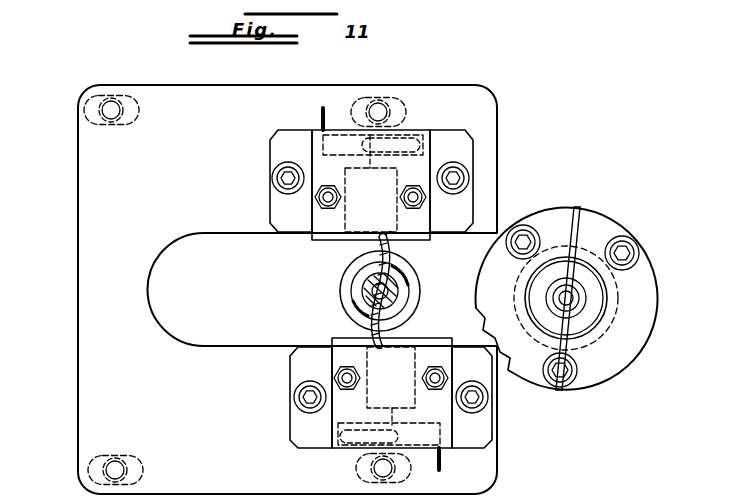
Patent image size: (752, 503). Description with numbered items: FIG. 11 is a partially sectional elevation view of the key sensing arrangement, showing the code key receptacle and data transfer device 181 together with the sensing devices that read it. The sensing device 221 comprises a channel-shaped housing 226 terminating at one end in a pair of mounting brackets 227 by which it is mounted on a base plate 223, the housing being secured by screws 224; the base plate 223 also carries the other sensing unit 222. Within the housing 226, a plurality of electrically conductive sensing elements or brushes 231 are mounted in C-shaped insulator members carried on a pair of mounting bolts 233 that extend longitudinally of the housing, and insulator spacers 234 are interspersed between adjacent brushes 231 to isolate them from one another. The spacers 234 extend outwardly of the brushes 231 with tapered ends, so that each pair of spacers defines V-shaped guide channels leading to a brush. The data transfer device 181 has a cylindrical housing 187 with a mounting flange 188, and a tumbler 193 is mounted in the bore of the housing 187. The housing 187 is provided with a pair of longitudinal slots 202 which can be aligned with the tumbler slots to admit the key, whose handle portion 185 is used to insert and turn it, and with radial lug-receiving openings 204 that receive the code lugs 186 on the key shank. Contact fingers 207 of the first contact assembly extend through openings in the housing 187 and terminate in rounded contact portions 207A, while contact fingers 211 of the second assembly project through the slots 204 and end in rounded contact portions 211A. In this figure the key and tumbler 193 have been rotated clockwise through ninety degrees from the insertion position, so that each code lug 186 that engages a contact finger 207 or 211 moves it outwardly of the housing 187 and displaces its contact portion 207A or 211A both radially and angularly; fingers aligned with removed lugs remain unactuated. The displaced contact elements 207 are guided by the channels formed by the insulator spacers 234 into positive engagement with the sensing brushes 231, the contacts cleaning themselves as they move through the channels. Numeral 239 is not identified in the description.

The code key receptacle and data transfer device 181 is at (433, 255).
The handle portion 185 is at (581, 212).
The code lugs 186 is at (400, 260).
The cylindrical housing 187 is at (346, 303).
The mounting flange 188 is at (588, 289).
The tumbler 193 is at (352, 287).
The longitudinal slots 202 is at (412, 292).
The radial lug-receiving openings 204 is at (415, 308).
The contact fingers 207 is at (364, 262).
The rounded contact portion 207A is at (390, 240).
The contact fingers 211 is at (406, 318).
The rounded contact portion 211A is at (372, 338).
The sensing device 221 is at (371, 165).
The sensing unit 222 is at (286, 428).
The base plate 223 is at (105, 297).
The screws 224 is at (283, 178).
The channel-shaped housing 226 is at (433, 140).
The mounting brackets 227 is at (276, 140).
The sensing elements or brushes 231 is at (368, 153).
The mounting bolts 233 is at (336, 197).
The insulator spacers 234 is at (325, 237).
The stop pin 239 is at (320, 116).